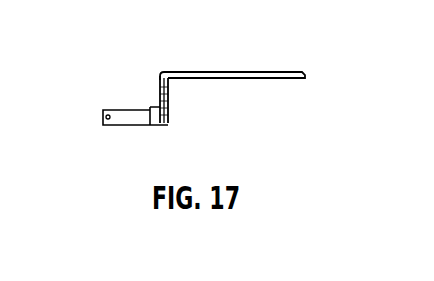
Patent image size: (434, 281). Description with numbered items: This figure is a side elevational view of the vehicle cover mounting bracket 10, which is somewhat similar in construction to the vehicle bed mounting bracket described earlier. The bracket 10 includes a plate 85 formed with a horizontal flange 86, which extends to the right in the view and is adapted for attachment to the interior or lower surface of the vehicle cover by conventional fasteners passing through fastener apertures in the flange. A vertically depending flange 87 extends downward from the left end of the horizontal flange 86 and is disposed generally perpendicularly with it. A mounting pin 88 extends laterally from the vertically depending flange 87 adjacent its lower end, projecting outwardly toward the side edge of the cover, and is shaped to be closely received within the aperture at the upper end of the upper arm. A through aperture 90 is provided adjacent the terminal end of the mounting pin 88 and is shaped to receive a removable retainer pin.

The vehicle cover mounting bracket 10 is at (305, 72).
The plate 85 is at (161, 72).
The horizontal flange 86 is at (240, 72).
The vertically depending flange 87 is at (170, 104).
The mounting pin 88 is at (131, 113).
The through aperture 90 is at (110, 120).